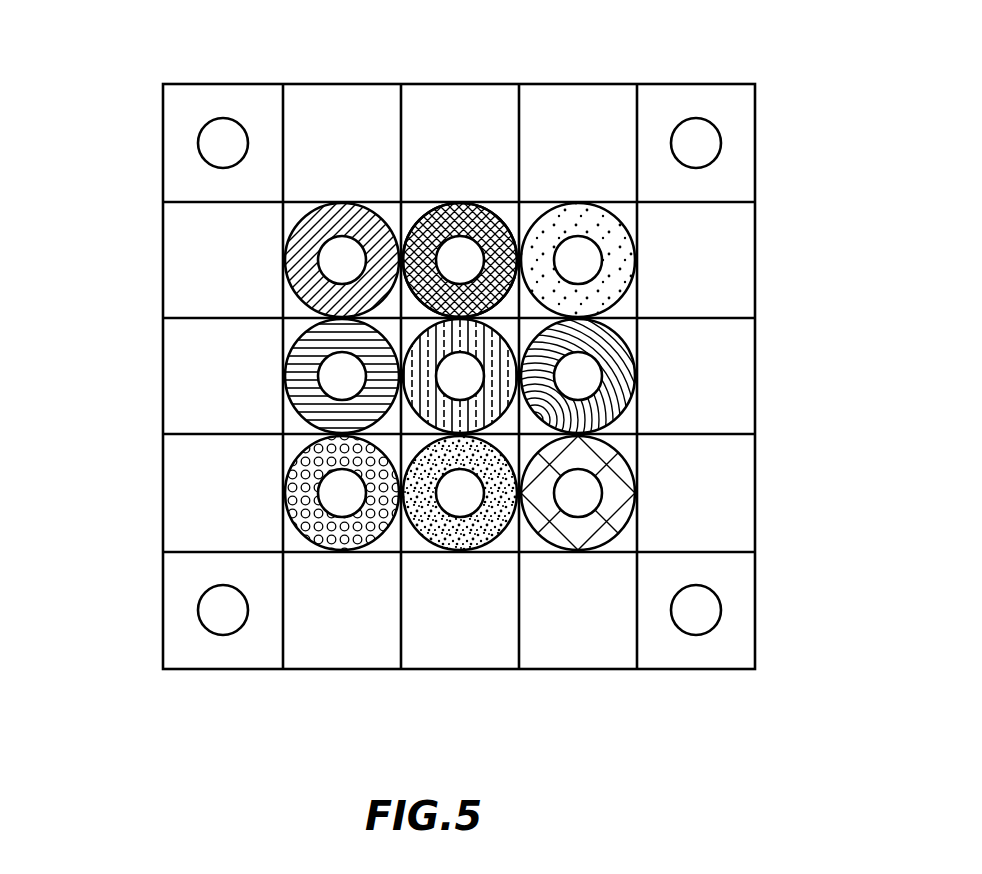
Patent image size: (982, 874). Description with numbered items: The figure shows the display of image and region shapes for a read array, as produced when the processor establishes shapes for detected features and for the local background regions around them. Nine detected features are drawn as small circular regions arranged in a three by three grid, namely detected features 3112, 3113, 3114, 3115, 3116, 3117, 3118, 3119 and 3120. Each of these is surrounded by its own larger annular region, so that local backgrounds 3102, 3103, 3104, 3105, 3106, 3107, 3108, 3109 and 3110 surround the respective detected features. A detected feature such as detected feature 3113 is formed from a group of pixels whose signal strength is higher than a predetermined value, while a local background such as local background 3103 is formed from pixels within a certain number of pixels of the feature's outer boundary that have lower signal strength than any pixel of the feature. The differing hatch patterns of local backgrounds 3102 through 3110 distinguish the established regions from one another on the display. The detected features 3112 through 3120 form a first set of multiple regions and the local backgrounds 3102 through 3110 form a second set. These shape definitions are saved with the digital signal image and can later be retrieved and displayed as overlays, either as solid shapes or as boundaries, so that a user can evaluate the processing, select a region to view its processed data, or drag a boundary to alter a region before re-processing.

The local background 3102 is at (313, 222).
The local background 3103 is at (463, 250).
The local background 3104 is at (577, 223).
The local background 3105 is at (620, 362).
The local background 3106 is at (460, 397).
The local background 3107 is at (286, 358).
The local background 3108 is at (355, 550).
The local background 3109 is at (497, 553).
The local background 3110 is at (613, 530).
The detected feature 3112 is at (335, 255).
The detected feature 3113 is at (435, 205).
The detected feature 3114 is at (582, 265).
The detected feature 3115 is at (335, 372).
The detected feature 3116 is at (457, 370).
The detected feature 3117 is at (577, 378).
The detected feature 3118 is at (337, 490).
The detected feature 3119 is at (462, 500).
The detected feature 3120 is at (590, 495).